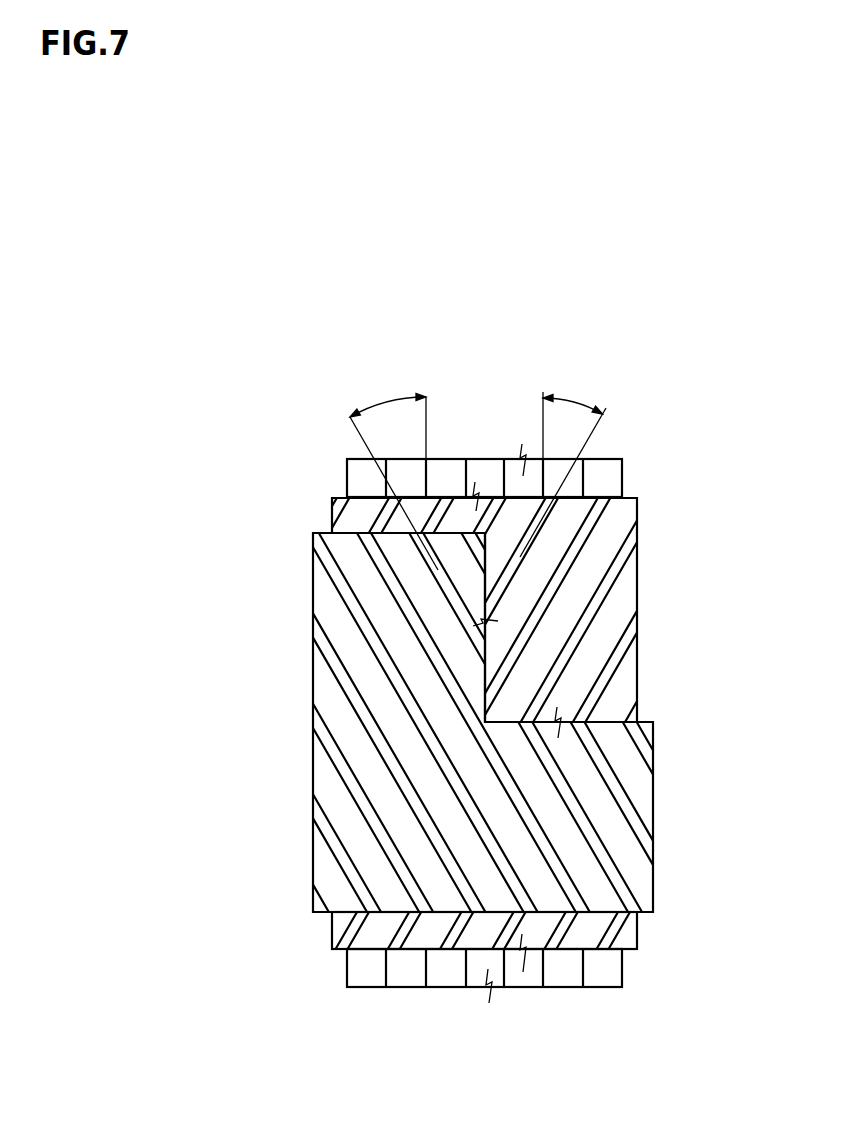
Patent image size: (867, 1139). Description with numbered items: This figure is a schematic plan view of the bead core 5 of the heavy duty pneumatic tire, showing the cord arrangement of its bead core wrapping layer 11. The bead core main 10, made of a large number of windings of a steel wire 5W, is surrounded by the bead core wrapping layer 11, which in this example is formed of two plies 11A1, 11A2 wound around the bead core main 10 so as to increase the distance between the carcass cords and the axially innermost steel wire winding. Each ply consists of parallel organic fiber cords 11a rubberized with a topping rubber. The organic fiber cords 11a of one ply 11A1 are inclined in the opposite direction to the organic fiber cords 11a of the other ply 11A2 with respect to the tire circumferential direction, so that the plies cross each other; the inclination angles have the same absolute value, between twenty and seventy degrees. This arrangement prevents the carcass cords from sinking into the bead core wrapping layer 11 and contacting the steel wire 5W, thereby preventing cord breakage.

The bead core 5 is at (652, 433).
The bead core main 10 is at (485, 428).
The steel wire 5W is at (360, 480).
The bead core wrapping layer 11 is at (198, 493).
The ply 11A1 is at (328, 600).
The ply 11A2 is at (327, 518).
The organic fiber cords 11a is at (632, 528).